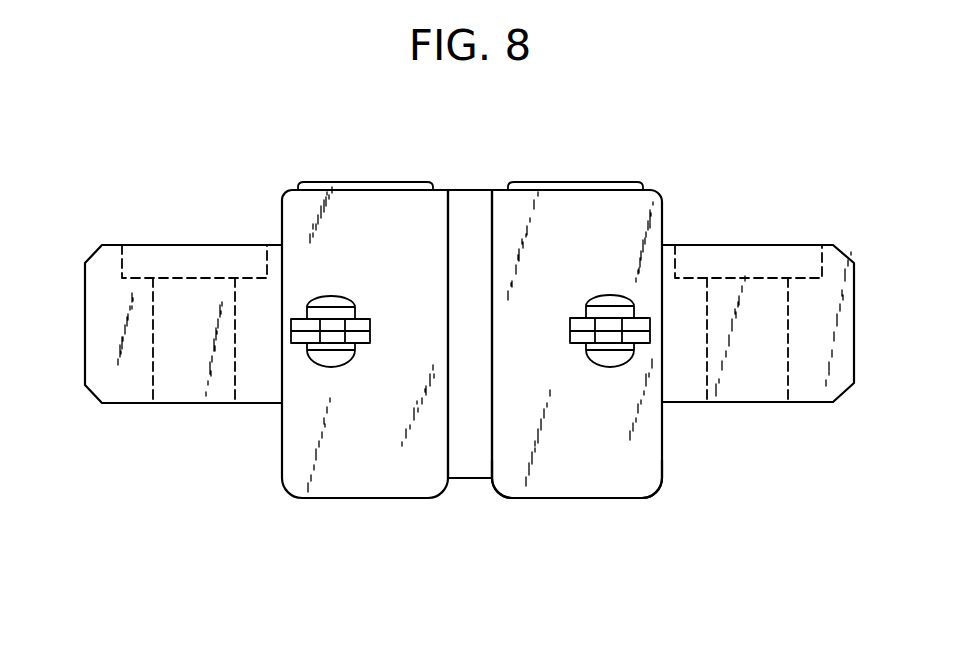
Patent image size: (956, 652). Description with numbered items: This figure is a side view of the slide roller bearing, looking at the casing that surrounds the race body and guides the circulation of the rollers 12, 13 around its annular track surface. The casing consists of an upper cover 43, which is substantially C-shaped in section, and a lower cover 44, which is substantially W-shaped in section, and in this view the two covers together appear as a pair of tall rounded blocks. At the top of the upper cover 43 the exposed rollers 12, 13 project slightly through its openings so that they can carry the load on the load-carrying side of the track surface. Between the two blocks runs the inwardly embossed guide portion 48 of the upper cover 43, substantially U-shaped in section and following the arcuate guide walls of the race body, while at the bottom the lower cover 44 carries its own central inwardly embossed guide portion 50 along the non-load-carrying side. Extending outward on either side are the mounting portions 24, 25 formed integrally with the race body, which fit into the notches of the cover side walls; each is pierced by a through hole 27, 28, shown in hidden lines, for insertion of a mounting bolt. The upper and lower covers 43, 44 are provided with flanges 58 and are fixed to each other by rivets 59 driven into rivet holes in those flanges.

The roller 12 is at (366, 183).
The roller 13 is at (576, 183).
The mounting portion 24 is at (90, 340).
The mounting portion 25 is at (840, 282).
The through hole 27 is at (153, 375).
The through hole 28 is at (788, 360).
The upper cover 43 is at (637, 212).
The lower cover 44 is at (640, 471).
The guide portion 48 is at (468, 205).
The guide portion 50 is at (492, 457).
The flange 58 is at (357, 327).
The rivet 59 is at (334, 303).